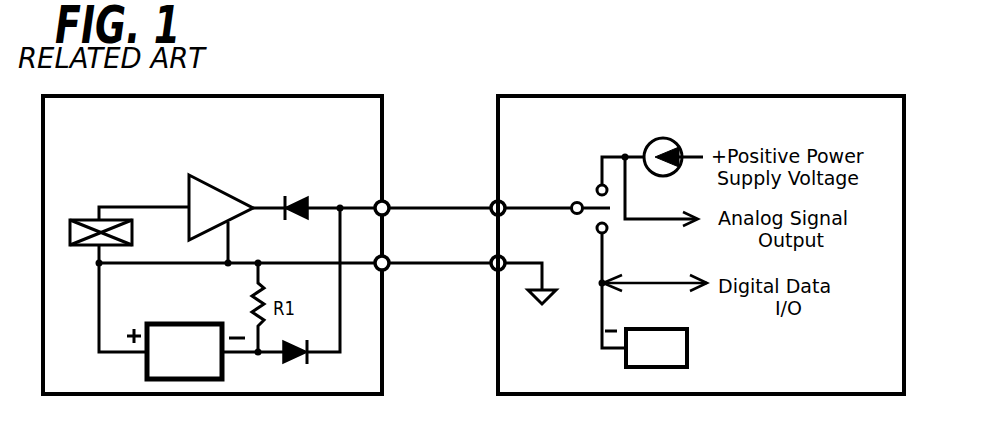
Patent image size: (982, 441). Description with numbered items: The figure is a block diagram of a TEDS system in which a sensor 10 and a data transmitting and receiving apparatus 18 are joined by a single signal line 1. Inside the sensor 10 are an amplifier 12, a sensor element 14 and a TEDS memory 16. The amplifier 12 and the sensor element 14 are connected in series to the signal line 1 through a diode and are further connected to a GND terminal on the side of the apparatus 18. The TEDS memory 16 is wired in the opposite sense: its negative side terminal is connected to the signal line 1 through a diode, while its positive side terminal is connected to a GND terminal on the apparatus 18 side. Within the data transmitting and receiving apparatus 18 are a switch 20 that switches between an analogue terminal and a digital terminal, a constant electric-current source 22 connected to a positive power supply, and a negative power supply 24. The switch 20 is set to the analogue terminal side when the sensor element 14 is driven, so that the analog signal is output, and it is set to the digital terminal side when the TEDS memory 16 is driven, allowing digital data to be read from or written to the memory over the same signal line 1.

The sensor 10 is at (258, 94).
The amplifier 12 is at (227, 187).
The sensor element 14 is at (97, 219).
The TEDS memory 16 is at (182, 322).
The signal line 1 is at (447, 205).
The data transmitting and receiving apparatus 18 is at (781, 95).
The switch 20 is at (560, 161).
The constant electric-current source 22 is at (683, 144).
The negative power supply 24 is at (689, 346).